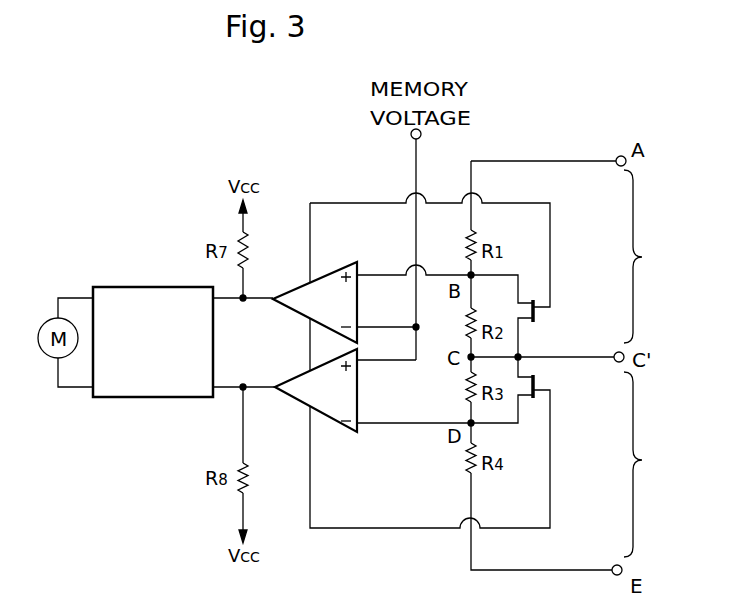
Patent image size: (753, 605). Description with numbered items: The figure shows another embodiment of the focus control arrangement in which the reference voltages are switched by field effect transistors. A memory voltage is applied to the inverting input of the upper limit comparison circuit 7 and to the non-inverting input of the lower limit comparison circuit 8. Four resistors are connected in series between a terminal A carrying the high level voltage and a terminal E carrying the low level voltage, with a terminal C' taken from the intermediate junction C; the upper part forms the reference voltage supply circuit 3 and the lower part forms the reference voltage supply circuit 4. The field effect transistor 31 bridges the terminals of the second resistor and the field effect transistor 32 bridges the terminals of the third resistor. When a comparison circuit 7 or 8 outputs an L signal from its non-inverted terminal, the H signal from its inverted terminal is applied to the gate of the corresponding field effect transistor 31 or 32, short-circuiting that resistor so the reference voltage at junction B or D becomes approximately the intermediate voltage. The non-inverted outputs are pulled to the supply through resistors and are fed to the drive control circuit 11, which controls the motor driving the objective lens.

The reference voltage supply circuit 3 is at (654, 256).
The reference voltage supply circuit 4 is at (652, 474).
The upper limit comparison circuit 7 is at (302, 315).
The lower limit comparison circuit 8 is at (302, 402).
The drive control circuit 11 is at (144, 287).
The field effect transistor 31 is at (536, 312).
The field effect transistor 32 is at (536, 378).